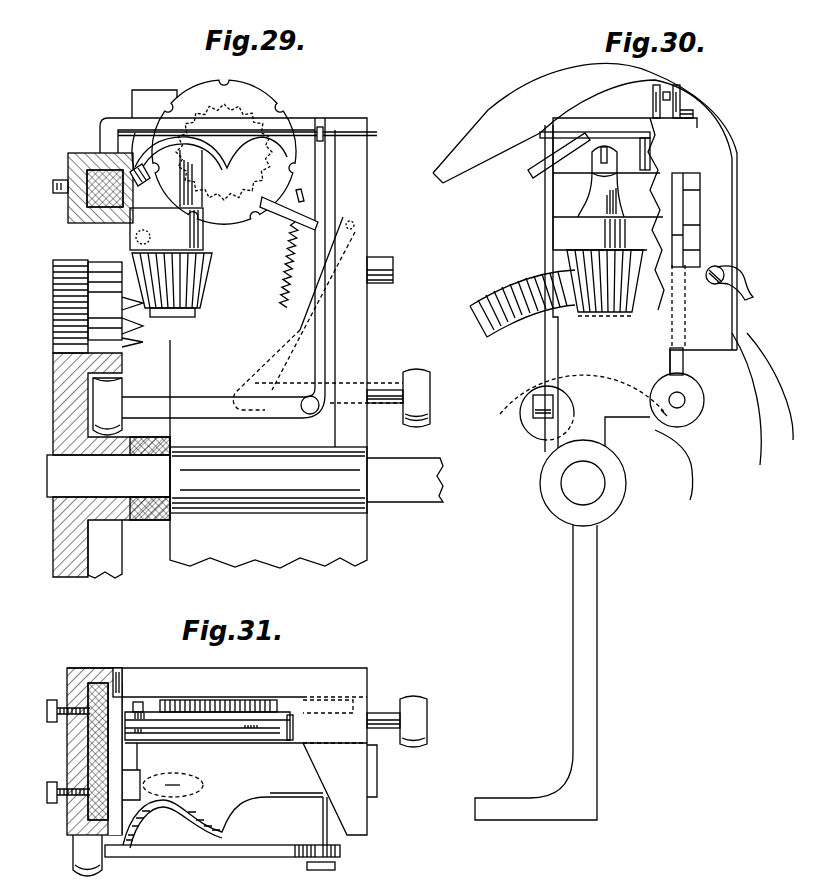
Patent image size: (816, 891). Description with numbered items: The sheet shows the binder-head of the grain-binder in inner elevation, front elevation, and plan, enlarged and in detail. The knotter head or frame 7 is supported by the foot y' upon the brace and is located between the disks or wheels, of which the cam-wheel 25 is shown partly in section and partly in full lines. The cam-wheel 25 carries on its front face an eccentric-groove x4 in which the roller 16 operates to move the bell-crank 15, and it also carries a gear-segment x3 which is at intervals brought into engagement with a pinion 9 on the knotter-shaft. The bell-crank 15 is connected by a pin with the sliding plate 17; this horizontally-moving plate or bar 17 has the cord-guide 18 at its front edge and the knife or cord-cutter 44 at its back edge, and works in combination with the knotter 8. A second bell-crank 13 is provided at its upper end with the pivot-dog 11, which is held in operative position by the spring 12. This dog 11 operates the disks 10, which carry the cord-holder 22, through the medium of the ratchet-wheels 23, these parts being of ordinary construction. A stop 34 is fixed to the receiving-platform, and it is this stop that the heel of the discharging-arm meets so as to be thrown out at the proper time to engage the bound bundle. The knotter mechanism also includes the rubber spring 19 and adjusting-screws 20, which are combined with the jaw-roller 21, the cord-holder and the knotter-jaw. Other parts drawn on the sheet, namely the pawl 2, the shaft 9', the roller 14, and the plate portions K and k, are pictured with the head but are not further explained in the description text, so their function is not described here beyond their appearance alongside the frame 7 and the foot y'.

In FIG. 29, the pawl 2 is at (140, 186).
In FIG. 29, the knotter head or frame 7 is at (233, 343).
In FIG. 30, the knotter head or frame 7 is at (645, 246).
In FIG. 31, the knotter head or frame 7 is at (330, 660).
In FIG. 29, the knotter 8 is at (194, 178).
In FIG. 30, the knotter 8 is at (606, 181).
In FIG. 29, the pinion 9 is at (172, 262).
In FIG. 30, the pinion 9 is at (580, 283).
In FIG. 29, the shaft 9' is at (245, 480).
In FIG. 30, the shaft 9' is at (595, 471).
In FIG. 29, the disks 10 is at (232, 152).
In FIG. 30, the disks 10 is at (652, 97).
In FIG. 31, the disks 10 is at (290, 740).
In FIG. 29, the pivot-dog 11 is at (318, 299).
In FIG. 30, the pivot-dog 11 is at (700, 205).
In FIG. 29, the spring 12 is at (280, 265).
In FIG. 29, the bell-crank 13 is at (386, 383).
In FIG. 30, the bell-crank 13 is at (683, 370).
In FIG. 31, the bell-crank 13 is at (383, 712).
In FIG. 29, the roller 14 is at (416, 398).
In FIG. 30, the roller 14 is at (686, 400).
In FIG. 31, the roller 14 is at (423, 721).
In FIG. 29, the bell-crank 15 is at (234, 268).
In FIG. 30, the bell-crank 15 is at (540, 288).
In FIG. 31, the bell-crank 15 is at (222, 843).
In FIG. 29, the roller 16 is at (122, 384).
In FIG. 30, the roller 16 is at (533, 412).
In FIG. 31, the roller 16 is at (100, 859).
In FIG. 29, the sliding plate 17 is at (378, 134).
In FIG. 30, the sliding plate 17 is at (600, 132).
In FIG. 31, the sliding plate 17 is at (300, 785).
In FIG. 29, the cord-guide 18 is at (209, 155).
In FIG. 30, the cord-guide 18 is at (552, 163).
In FIG. 31, the cord-guide 18 is at (195, 822).
In FIG. 29, the rubber spring 19 is at (93, 199).
In FIG. 31, the rubber spring 19 is at (88, 762).
In FIG. 31, the adjusting-screws 20 is at (56, 751).
In FIG. 30, the jaw-roller 21 is at (583, 394).
In FIG. 31, the jaw-roller 21 is at (143, 780).
In FIG. 29, the cord-holder 22 is at (160, 84).
In FIG. 30, the cord-holder 22 is at (680, 88).
In FIG. 31, the cord-holder 22 is at (170, 720).
In FIG. 31, the ratchet-wheels 23 is at (245, 705).
In FIG. 29, the cam-wheel 25 is at (58, 386).
In FIG. 30, the cam-wheel 25 is at (762, 399).
In FIG. 29, the stop 34 is at (391, 264).
In FIG. 30, the stop 34 is at (737, 277).
In FIG. 30, the knife 44 is at (650, 150).
In FIG. 29, the gear-segment x3 is at (103, 312).
In FIG. 30, the gear-segment x3 is at (505, 293).
In FIG. 30, the eccentric-groove x4 is at (670, 463).
In FIG. 30, the plate K is at (585, 207).
In FIG. 30, the plate edge k is at (462, 130).
In FIG. 30, the foot y' is at (536, 672).